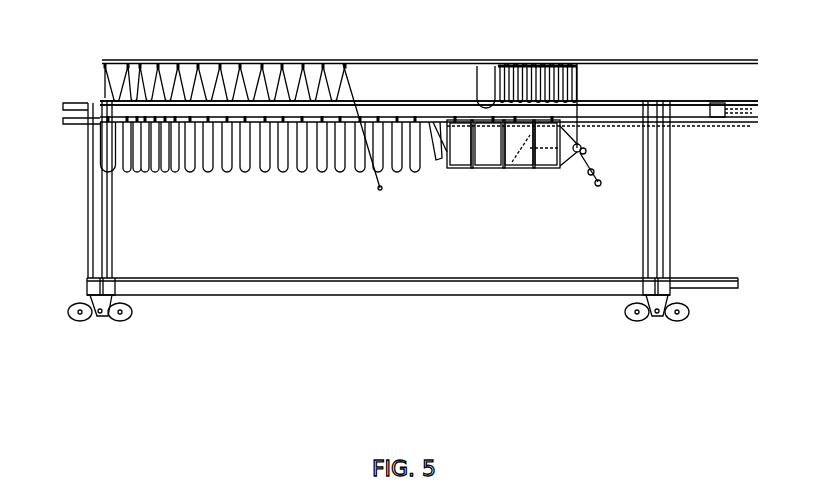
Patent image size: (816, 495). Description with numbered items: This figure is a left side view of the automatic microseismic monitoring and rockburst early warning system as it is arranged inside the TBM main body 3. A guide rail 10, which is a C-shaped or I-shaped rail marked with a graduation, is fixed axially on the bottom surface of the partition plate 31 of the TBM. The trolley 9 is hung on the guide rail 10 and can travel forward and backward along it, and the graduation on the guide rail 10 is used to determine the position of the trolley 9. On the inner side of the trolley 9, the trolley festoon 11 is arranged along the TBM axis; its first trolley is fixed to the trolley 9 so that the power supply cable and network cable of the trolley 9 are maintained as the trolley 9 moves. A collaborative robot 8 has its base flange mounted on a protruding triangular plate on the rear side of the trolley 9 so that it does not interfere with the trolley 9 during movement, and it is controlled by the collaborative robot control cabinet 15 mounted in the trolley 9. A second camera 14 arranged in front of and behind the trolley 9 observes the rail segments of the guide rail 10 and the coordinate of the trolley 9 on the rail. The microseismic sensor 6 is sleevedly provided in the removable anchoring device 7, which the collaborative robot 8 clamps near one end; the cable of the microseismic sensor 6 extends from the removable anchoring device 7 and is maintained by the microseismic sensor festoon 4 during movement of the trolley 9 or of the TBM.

The TBM main body 3 is at (113, 217).
The microseismic sensor festoon 4 is at (300, 62).
The microseismic sensor 6 is at (380, 188).
The removable anchoring device 7 is at (463, 214).
The collaborative robot 8 is at (578, 170).
The trolley 9 is at (473, 168).
The guide rail 10 is at (730, 120).
The trolley festoon 11 is at (237, 170).
The second camera 14 is at (443, 167).
The collaborative robot control cabinet 15 is at (518, 163).
The partition plate 31 is at (602, 105).